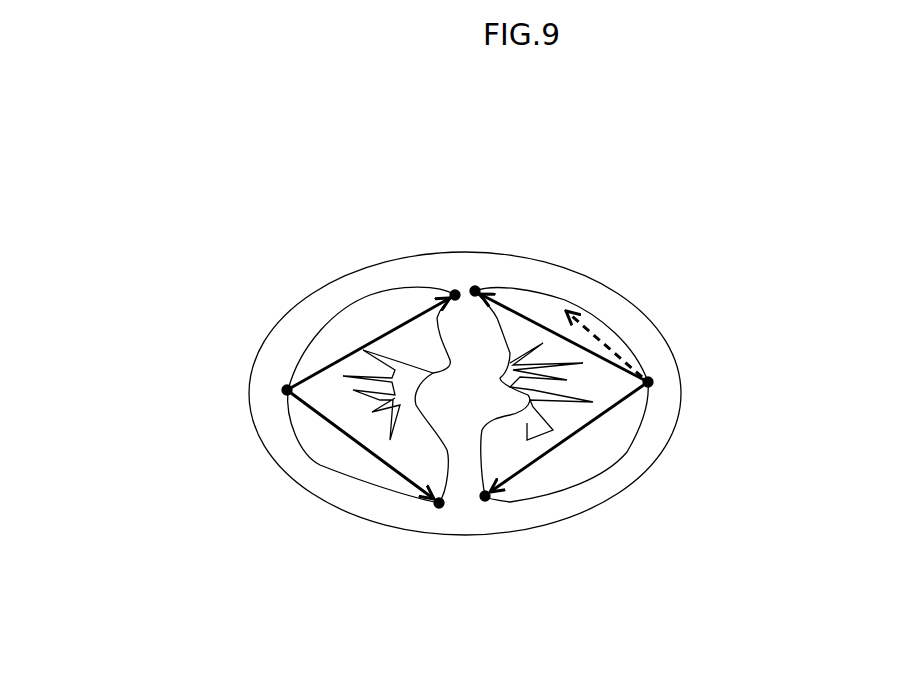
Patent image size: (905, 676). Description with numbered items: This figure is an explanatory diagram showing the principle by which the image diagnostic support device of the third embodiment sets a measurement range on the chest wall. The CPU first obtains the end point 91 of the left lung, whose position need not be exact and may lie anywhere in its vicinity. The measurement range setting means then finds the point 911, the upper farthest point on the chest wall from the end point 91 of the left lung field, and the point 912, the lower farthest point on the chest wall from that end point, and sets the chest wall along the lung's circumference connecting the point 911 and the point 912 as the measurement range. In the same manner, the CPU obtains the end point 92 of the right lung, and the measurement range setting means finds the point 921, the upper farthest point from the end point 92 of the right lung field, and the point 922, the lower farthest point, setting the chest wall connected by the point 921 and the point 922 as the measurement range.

The end point of right lung 92 is at (287, 390).
The end point of left lung 91 is at (648, 382).
The upper farthest point on the chest wall from end point 92 921 is at (455, 295).
The upper farthest point on the chest wall from end point 91 911 is at (475, 291).
The lower farthest point on the chest wall from end point 92 922 is at (439, 503).
The lower farthest point on the chest wall from end point 91 912 is at (485, 496).